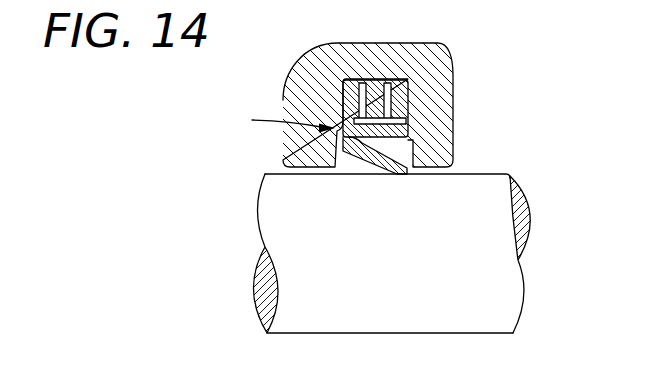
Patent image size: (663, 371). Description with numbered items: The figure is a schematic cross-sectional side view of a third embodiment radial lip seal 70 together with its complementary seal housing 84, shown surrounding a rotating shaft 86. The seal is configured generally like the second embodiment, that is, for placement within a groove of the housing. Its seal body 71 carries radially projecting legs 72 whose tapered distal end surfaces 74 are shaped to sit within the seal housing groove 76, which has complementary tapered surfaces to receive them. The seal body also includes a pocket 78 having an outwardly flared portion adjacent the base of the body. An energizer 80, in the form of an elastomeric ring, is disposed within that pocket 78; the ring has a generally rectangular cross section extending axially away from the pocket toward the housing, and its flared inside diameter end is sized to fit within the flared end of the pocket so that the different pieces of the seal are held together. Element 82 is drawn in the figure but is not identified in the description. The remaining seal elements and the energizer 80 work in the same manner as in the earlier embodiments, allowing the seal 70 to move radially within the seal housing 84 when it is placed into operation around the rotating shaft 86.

The radial lip seal 70 is at (356, 103).
The seal body 71 is at (279, 122).
The radially projecting legs 72 is at (348, 97).
The tapered distal end surfaces 74 is at (345, 80).
The seal housing groove 76 is at (388, 96).
The pocket 78 is at (360, 96).
The energizer 80 is at (358, 146).
The center web 82 is at (374, 98).
The seal housing 84 is at (434, 68).
The rotating shaft 86 is at (465, 215).